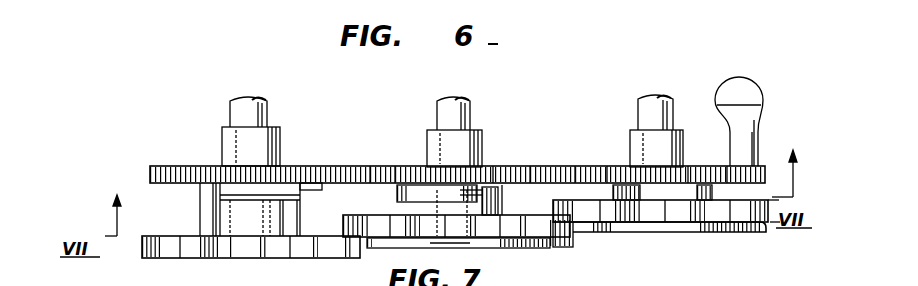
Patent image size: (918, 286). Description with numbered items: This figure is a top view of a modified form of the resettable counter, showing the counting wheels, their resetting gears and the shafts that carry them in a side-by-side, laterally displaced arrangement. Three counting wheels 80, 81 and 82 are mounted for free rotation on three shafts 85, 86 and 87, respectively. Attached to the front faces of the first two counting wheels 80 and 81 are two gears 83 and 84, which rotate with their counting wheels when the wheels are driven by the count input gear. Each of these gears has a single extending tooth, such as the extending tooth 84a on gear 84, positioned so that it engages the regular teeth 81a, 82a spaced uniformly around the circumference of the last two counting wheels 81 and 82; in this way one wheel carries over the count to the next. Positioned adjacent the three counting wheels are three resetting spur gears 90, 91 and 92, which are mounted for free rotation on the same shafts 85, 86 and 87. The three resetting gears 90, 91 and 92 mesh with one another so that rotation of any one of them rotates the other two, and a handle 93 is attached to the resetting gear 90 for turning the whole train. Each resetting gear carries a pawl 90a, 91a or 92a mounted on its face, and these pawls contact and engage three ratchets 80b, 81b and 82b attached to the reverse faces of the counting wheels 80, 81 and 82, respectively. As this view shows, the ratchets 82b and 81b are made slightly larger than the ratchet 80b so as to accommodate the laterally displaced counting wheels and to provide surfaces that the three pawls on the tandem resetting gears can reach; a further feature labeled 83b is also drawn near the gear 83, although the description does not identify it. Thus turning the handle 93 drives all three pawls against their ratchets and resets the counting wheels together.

The counting wheel 80 is at (766, 220).
The ratchet 80b is at (613, 192).
The counting wheel 81 is at (562, 246).
The regular teeth 81a is at (578, 228).
The ratchet 81b is at (418, 207).
The counting wheel 82 is at (218, 259).
The regular teeth 82a is at (145, 250).
The ratchet 82b is at (207, 200).
The gear 83 is at (663, 225).
The intermediate plate lug 83b is at (595, 232).
The gear 84 is at (410, 252).
The extending tooth 84a is at (453, 249).
The shaft 85 is at (646, 105).
The shaft 86 is at (445, 105).
The shaft 87 is at (241, 108).
The resetting spur gear 90 is at (591, 177).
The pawl 90a is at (694, 180).
The resetting spur gear 91 is at (382, 176).
The pawl 91a is at (504, 176).
The resetting spur gear 92 is at (168, 176).
The pawl 92a is at (302, 186).
The handle 93 is at (743, 91).